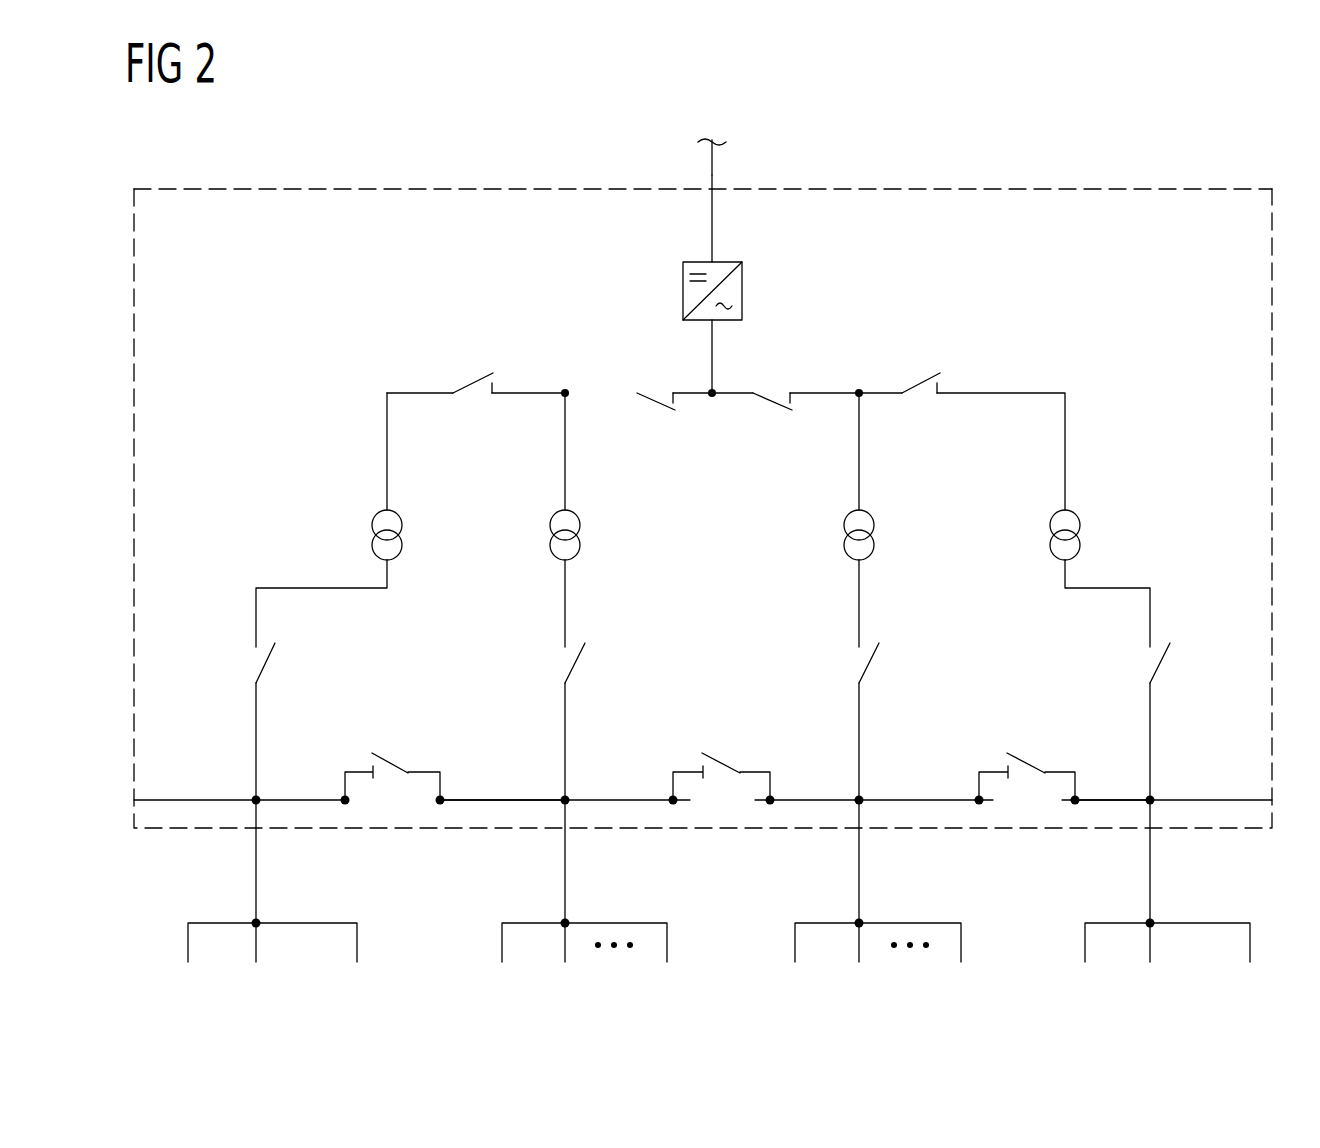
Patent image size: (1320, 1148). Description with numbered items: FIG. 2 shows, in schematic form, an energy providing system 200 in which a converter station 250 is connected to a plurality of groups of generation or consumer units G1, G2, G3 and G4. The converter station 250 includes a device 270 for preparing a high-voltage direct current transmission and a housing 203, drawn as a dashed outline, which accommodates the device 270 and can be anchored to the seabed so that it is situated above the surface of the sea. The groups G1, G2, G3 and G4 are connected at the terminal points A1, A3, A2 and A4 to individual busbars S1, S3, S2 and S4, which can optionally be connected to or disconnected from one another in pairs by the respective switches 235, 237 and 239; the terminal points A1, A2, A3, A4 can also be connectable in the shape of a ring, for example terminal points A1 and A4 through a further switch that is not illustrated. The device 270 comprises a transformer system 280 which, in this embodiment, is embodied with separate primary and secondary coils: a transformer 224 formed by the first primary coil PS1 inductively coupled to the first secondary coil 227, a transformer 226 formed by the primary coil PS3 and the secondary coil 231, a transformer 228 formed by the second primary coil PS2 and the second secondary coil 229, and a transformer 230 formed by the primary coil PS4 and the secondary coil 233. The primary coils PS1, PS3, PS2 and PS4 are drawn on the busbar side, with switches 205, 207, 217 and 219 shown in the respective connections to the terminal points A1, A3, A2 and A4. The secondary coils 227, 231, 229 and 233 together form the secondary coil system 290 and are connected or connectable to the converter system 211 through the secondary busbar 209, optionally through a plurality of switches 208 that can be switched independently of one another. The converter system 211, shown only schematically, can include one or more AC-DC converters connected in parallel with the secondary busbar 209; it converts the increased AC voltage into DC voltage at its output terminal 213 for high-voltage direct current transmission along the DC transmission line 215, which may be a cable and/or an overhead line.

The energy providing system 200 is at (1227, 158).
The housing 203 is at (522, 189).
The switch 205 is at (265, 667).
The switch 207 is at (575, 667).
The switch 208 is at (472, 386).
The secondary busbar 209 is at (415, 393).
The converter system 211 is at (744, 292).
The output terminal 213 is at (740, 244).
The DC transmission line 215 is at (716, 174).
The switch 217 is at (870, 667).
The switch 219 is at (1160, 667).
The transformer 224 is at (407, 522).
The transformer 226 is at (585, 522).
The first secondary coil 227 is at (372, 525).
The transformer 228 is at (883, 522).
The second secondary coil 229 is at (844, 525).
The transformer 230 is at (1088, 522).
The secondary coil 231 is at (550, 525).
The secondary coil 233 is at (1050, 525).
The switch 235 is at (393, 762).
The switch 237 is at (723, 762).
The switch 239 is at (1028, 762).
The converter station 250 is at (322, 180).
The device for preparing a high-voltage direct current transmission 270 is at (1163, 607).
The transformer system 280 is at (330, 473).
The secondary coil system 290 is at (1108, 388).
The first primary coil PS1 is at (372, 545).
The second primary coil PS2 is at (844, 545).
The primary coil PS3 is at (550, 545).
The primary coil PS4 is at (1050, 545).
The bus section 1 S1 is at (200, 800).
The bus section 2 S2 is at (935, 800).
The bus section 3 S3 is at (490, 800).
The bus section 4 S4 is at (1100, 800).
The terminal point A1 is at (258, 800).
The terminal point A2 is at (861, 800).
The terminal point A3 is at (567, 800).
The terminal point A4 is at (1152, 800).
The load group 1 G1 is at (220, 907).
The load group 2 G2 is at (845, 907).
The load group 3 G3 is at (530, 907).
The load group 4 G4 is at (1135, 907).